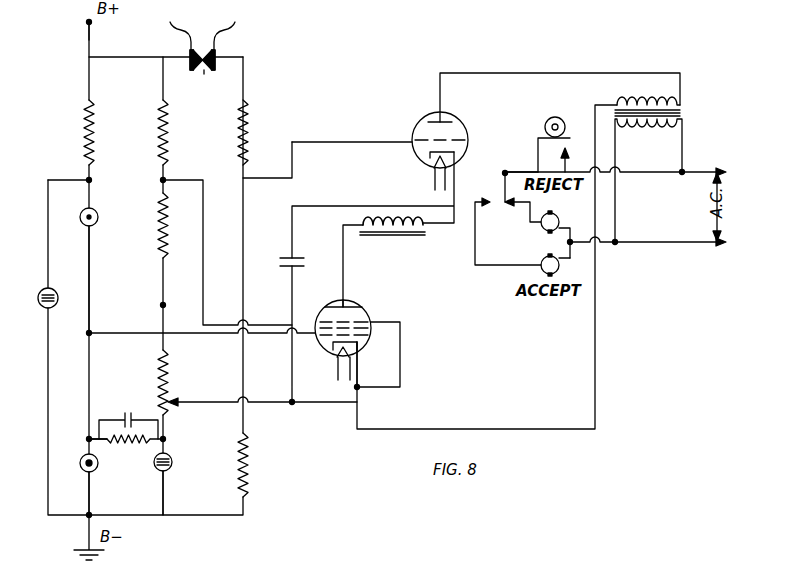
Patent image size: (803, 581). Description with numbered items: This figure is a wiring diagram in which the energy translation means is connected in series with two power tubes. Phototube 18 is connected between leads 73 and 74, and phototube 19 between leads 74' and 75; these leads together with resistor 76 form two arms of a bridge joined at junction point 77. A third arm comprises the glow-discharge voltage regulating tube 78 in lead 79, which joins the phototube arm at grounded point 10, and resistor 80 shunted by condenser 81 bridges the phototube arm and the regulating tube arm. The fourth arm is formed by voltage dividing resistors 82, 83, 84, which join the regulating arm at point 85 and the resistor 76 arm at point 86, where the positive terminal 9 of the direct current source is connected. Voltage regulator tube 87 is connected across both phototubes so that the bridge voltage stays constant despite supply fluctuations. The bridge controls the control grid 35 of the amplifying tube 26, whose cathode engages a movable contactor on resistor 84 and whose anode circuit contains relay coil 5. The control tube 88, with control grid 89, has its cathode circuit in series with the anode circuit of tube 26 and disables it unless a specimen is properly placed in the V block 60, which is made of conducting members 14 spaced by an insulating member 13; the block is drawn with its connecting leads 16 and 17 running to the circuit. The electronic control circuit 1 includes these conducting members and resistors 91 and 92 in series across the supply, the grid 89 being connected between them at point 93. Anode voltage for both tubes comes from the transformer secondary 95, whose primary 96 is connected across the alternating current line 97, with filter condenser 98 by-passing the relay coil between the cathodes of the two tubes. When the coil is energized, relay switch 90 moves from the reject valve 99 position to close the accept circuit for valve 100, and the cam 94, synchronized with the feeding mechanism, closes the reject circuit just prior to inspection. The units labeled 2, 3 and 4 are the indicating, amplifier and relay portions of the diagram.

The electronic control circuit 1 is at (214, 20).
The indicating unit 2 is at (128, 288).
The amplifier unit 3 is at (326, 297).
The relay unit 4 is at (540, 253).
The relay coil 5 is at (448, 256).
The positive terminal 9 is at (87, 23).
The ground point 10 is at (90, 514).
The insulating member 13 is at (204, 72).
The conducting members 14 is at (172, 24).
The crystal electrode 16 is at (190, 56).
The crystal electrode 17 is at (216, 58).
The phototube 18 is at (98, 466).
The phototube 19 is at (97, 210).
The amplifying tube 26 is at (368, 306).
The control grid 35 is at (322, 345).
The V block 60 is at (194, 64).
The lead 73 is at (87, 440).
The lead 74 is at (70, 493).
The lead 74' is at (67, 164).
The lead 75 is at (88, 280).
The resistor 76 is at (95, 120).
The junction point 77 is at (88, 333).
The voltage regulating tube 78 is at (172, 462).
The lead 79 is at (165, 494).
The resistor 80 is at (118, 443).
The condenser 81 is at (130, 412).
The voltage dividing resistor 82 is at (169, 132).
The voltage dividing resistor 83 is at (158, 240).
The voltage dividing resistor 84 is at (169, 378).
The junction point 85 is at (175, 410).
The junction point 86 is at (88, 57).
The voltage regulator tube 87 is at (48, 288).
The control tube 88 is at (466, 124).
The control grid 89 is at (398, 141).
The relay switch 90 is at (503, 198).
The resistor 91 is at (249, 120).
The resistor 92 is at (249, 462).
The connection point 93 is at (241, 178).
The cam 94 is at (566, 116).
The transformer secondary 95 is at (660, 92).
The transformer primary 96 is at (636, 128).
The alternating current line 97 is at (700, 207).
The filter condenser 98 is at (296, 256).
The reject valve 99 is at (554, 214).
The accept valve 100 is at (544, 272).